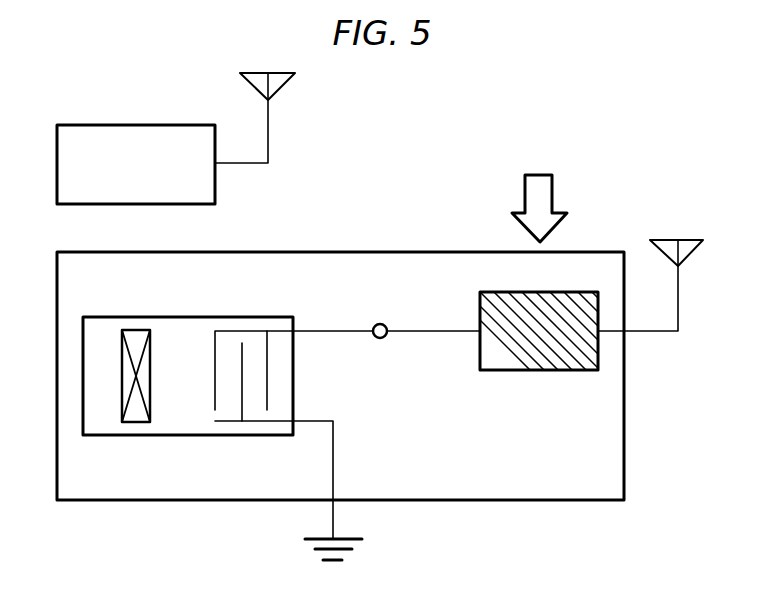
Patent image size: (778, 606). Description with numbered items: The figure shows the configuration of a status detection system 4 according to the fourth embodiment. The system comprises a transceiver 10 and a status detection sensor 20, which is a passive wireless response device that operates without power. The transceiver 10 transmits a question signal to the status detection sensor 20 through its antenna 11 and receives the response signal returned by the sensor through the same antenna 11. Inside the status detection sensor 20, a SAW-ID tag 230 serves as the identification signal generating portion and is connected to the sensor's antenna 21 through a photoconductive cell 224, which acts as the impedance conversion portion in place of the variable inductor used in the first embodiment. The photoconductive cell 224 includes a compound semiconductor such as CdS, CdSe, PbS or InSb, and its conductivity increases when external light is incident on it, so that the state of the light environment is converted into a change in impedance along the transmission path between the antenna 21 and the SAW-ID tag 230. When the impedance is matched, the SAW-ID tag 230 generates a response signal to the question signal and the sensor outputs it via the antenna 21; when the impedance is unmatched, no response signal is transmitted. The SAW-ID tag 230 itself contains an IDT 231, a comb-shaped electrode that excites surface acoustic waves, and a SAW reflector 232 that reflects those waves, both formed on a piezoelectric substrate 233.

The status detection system 4 is at (519, 97).
The transceiver 10 is at (117, 125).
The antenna 11 is at (240, 73).
The status detection sensor 20 is at (373, 252).
The antenna 21 is at (678, 240).
The photoconductive cell 224 is at (535, 371).
The SAW-ID tag 230 is at (187, 317).
The IDT 231 is at (256, 422).
The SAW reflector 232 is at (137, 422).
The piezoelectric substrate 233 is at (190, 422).